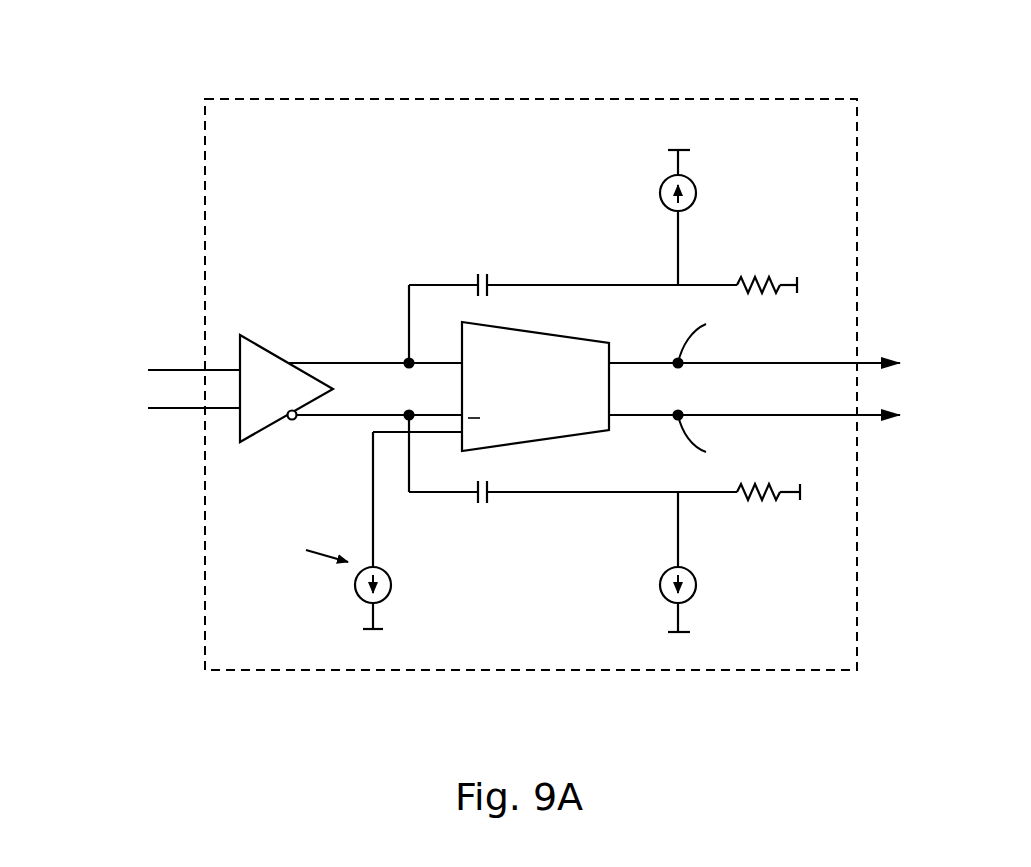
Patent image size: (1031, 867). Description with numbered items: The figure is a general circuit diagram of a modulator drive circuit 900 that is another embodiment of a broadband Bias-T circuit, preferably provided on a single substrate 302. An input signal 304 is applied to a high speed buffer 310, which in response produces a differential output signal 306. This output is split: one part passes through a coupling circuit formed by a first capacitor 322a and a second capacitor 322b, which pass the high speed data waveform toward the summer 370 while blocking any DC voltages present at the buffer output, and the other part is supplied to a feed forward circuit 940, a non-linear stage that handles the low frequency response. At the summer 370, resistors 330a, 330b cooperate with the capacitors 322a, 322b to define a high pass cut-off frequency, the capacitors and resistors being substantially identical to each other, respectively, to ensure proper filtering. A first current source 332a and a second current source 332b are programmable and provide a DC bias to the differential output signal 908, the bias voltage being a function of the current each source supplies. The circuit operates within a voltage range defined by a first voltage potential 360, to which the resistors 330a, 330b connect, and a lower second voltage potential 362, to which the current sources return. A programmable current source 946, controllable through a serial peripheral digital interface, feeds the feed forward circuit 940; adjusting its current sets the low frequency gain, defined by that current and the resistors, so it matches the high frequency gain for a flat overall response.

The modulator drive circuit 900 is at (312, 98).
The single substrate 302 is at (263, 142).
The input signal 304 is at (176, 360).
The differential output signal 306 is at (365, 345).
The high speed buffer 310 is at (258, 347).
The first capacitor 322a is at (472, 280).
The second capacitor 322b is at (472, 499).
The resistor 330a is at (772, 284).
The resistor 330b is at (778, 497).
The first current source 332a is at (660, 188).
The second current source 332b is at (660, 590).
The first voltage potential 360 is at (800, 290).
The second voltage potential 362 is at (688, 150).
The summer 370 is at (702, 392).
The differential output 908 is at (915, 337).
The feed forward circuit 940 is at (491, 386).
The programmable current source 946 is at (356, 586).